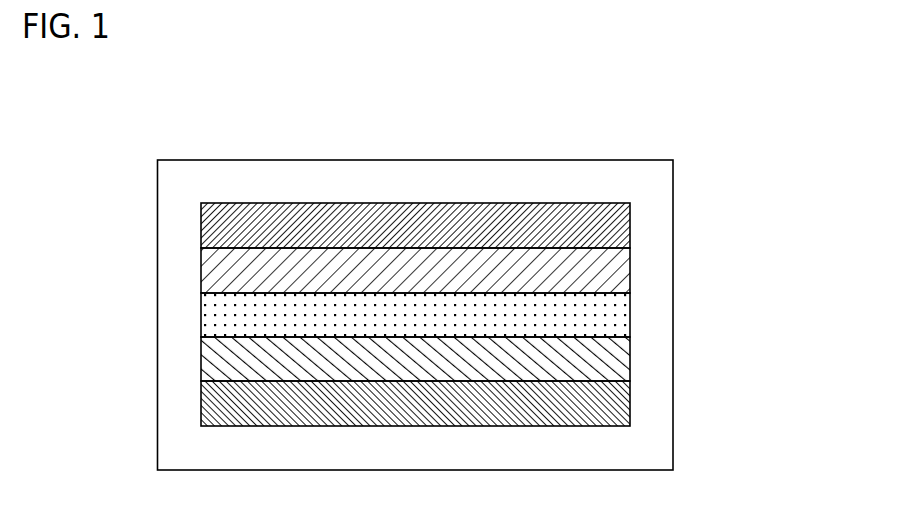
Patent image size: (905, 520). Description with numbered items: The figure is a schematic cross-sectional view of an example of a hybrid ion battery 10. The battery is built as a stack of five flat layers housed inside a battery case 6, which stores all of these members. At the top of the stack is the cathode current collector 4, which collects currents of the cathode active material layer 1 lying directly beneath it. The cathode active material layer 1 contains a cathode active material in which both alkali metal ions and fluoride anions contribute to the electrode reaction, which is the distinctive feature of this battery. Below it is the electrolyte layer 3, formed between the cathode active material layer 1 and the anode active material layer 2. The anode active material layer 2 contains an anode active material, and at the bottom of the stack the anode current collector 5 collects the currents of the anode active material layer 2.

The hybrid ion battery 10 is at (656, 126).
The battery case 6 is at (645, 190).
The cathode current collector 4 is at (602, 230).
The cathode active material layer 1 is at (600, 276).
The electrolyte layer 3 is at (600, 322).
The anode active material layer 2 is at (600, 367).
The anode current collector 5 is at (600, 407).